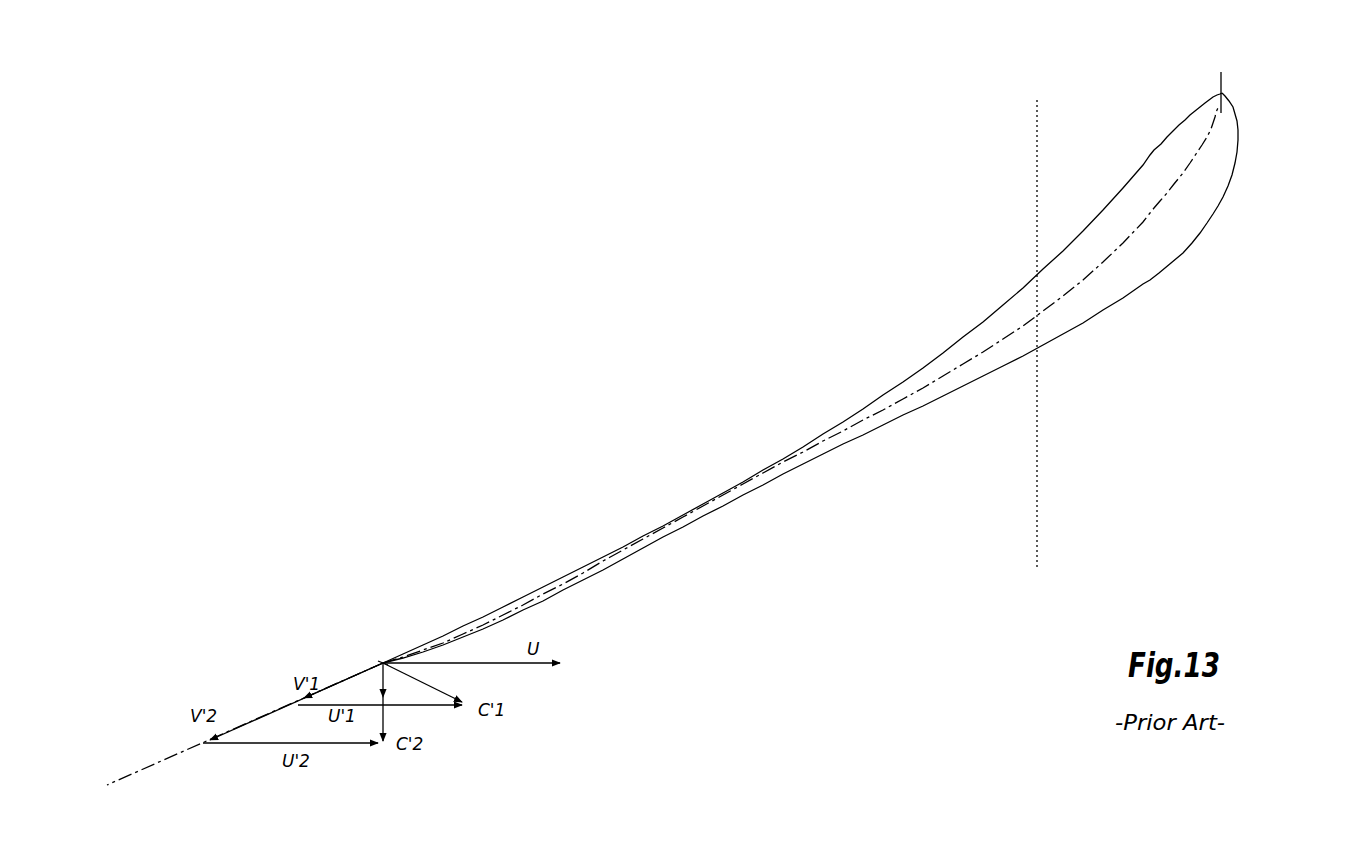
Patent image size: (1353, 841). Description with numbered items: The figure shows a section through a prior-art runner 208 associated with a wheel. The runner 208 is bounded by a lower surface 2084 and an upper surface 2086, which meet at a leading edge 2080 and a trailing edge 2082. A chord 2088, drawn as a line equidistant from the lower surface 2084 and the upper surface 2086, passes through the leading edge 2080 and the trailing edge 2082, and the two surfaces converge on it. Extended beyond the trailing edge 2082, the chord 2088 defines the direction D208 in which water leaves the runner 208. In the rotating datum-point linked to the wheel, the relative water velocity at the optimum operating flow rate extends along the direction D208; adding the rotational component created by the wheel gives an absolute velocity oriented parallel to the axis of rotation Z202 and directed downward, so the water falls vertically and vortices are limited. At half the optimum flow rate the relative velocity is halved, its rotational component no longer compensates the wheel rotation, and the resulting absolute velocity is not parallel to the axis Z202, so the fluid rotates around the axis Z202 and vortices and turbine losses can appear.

The runner 208 is at (807, 364).
The leading edge 2080 is at (1231, 88).
The trailing edge 2082 is at (372, 662).
The lower surface 2084 is at (918, 362).
The upper surface 2086 is at (1080, 337).
The chord 2088 is at (888, 408).
The axis of rotation Z202 is at (1065, 334).
The direction of flow D208 is at (245, 732).